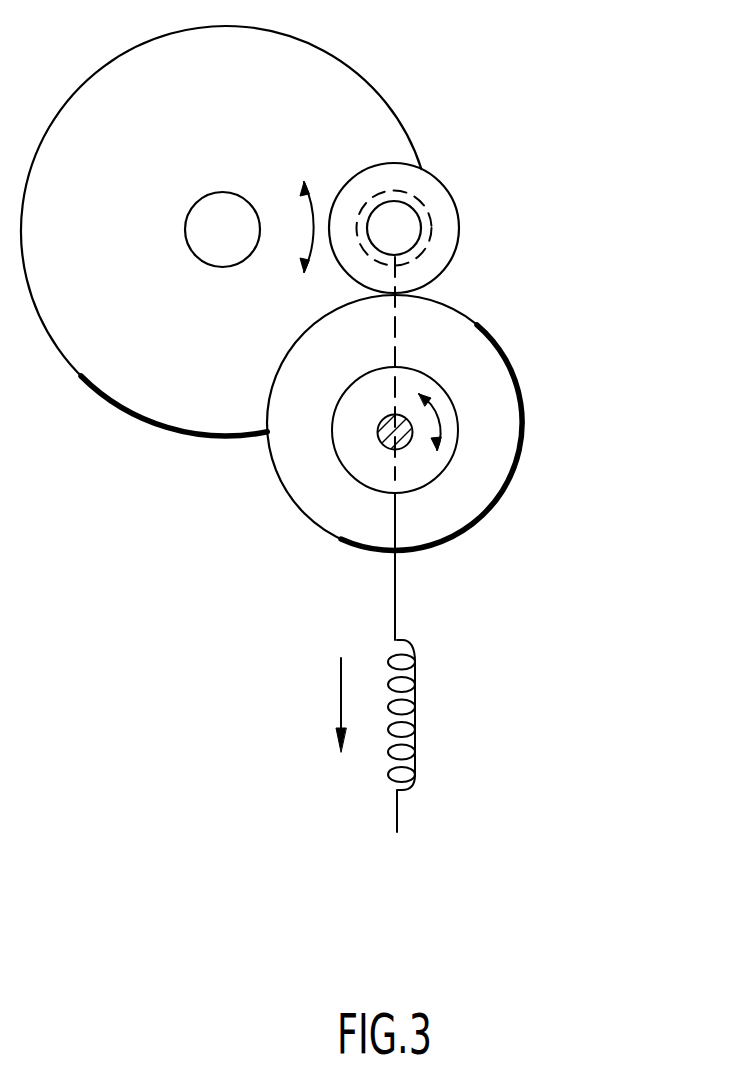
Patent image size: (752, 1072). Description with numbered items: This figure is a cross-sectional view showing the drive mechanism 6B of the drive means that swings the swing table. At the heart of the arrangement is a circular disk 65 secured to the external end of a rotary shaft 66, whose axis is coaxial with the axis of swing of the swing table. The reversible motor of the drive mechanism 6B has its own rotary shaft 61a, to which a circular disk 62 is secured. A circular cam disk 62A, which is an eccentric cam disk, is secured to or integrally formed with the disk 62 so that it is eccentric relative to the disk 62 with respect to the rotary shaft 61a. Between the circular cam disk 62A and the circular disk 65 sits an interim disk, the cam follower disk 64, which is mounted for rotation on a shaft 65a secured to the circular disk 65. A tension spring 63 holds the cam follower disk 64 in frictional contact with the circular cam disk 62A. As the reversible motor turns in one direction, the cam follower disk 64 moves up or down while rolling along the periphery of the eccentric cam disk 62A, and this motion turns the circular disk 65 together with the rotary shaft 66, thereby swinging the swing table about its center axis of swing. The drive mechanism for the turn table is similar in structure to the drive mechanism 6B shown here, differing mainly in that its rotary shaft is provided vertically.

The circular disk 65 is at (140, 409).
The rotary shaft 66 is at (190, 222).
The cam follower disk 64 is at (427, 173).
The shaft 65a is at (413, 234).
The drive mechanism 6B is at (502, 178).
The circular disk 62 is at (372, 467).
The circular cam disk 62A is at (517, 453).
The rotary shaft 61a is at (410, 438).
The tension spring 63 is at (415, 733).